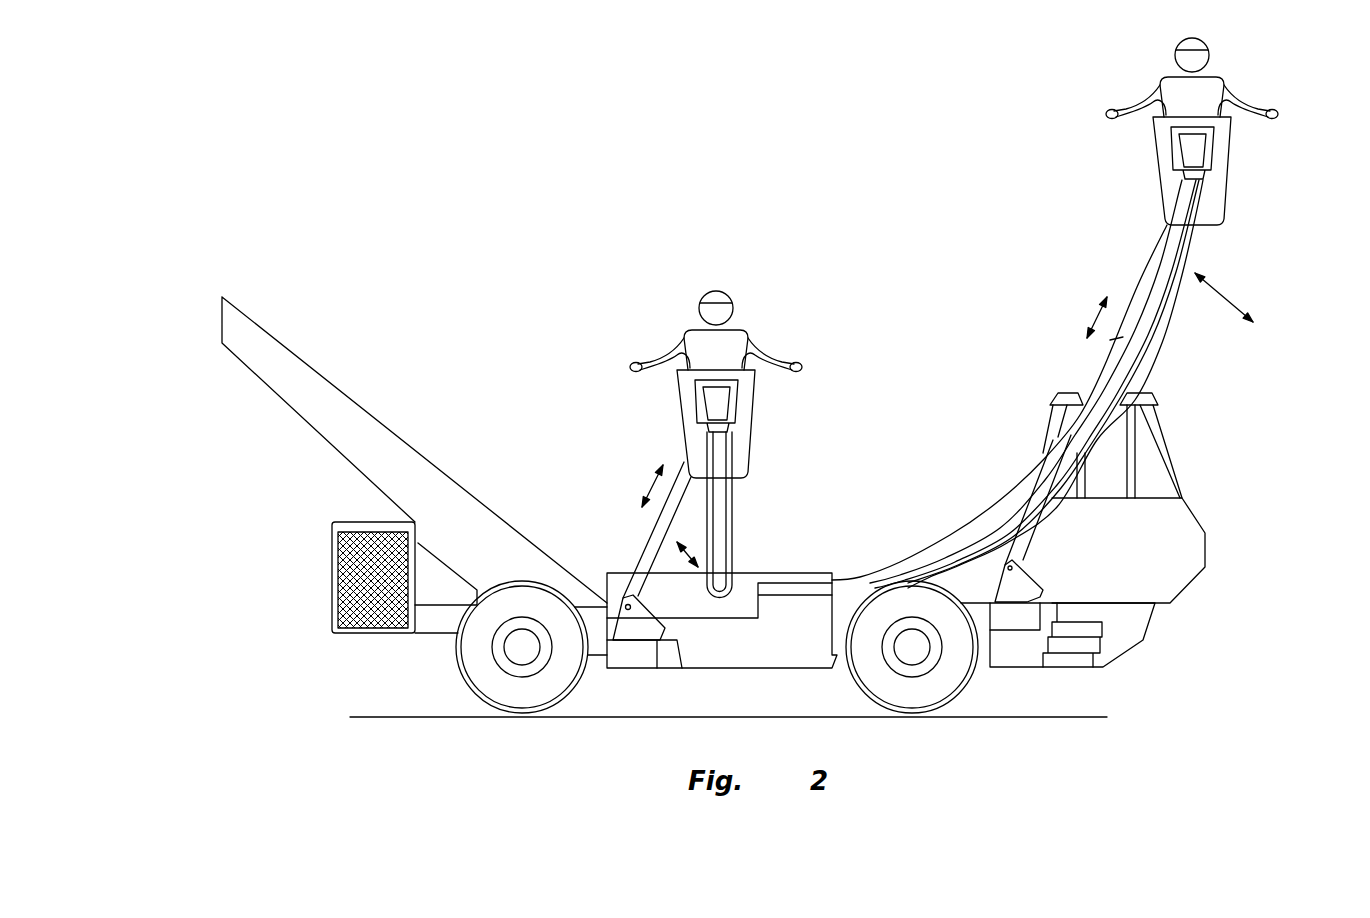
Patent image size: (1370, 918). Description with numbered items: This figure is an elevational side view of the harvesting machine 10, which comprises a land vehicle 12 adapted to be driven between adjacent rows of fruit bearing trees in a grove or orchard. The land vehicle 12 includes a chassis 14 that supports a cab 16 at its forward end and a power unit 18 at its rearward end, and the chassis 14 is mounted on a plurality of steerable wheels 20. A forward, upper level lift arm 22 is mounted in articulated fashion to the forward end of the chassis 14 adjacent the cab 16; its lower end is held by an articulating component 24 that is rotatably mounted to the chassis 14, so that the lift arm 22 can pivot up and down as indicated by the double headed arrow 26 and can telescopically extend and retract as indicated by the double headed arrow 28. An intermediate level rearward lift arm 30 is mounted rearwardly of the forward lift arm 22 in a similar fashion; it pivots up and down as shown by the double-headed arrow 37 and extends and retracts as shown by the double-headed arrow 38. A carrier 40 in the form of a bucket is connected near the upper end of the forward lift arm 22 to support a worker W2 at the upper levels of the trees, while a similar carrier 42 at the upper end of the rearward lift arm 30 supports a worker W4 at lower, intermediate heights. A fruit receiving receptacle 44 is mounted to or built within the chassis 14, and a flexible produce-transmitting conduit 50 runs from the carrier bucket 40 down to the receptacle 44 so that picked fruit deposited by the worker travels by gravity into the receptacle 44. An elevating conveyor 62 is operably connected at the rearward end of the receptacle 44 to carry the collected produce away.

The machine 10 is at (1213, 441).
The land vehicle 12 is at (1197, 580).
The chassis 14 is at (817, 573).
The cab 16 is at (1197, 517).
The power unit 18 is at (343, 521).
The wheels 20 is at (482, 659).
The forward lift arm 22 is at (1140, 273).
The articulating component 24 is at (1028, 592).
The double headed arrow 26 is at (1213, 297).
The double headed arrow 28 is at (1097, 313).
The rearward lift arm 30 is at (655, 520).
The double-headed arrow 37 is at (697, 562).
The double-headed arrow 38 is at (650, 480).
The carrier 40 is at (1222, 187).
The carrier 42 is at (755, 405).
The receptacle 44 is at (751, 573).
The produce-transmitting conduit 50 is at (973, 510).
The elevating conveyor 62 is at (362, 408).
The worker W2 is at (1156, 78).
The worker W4 is at (730, 297).